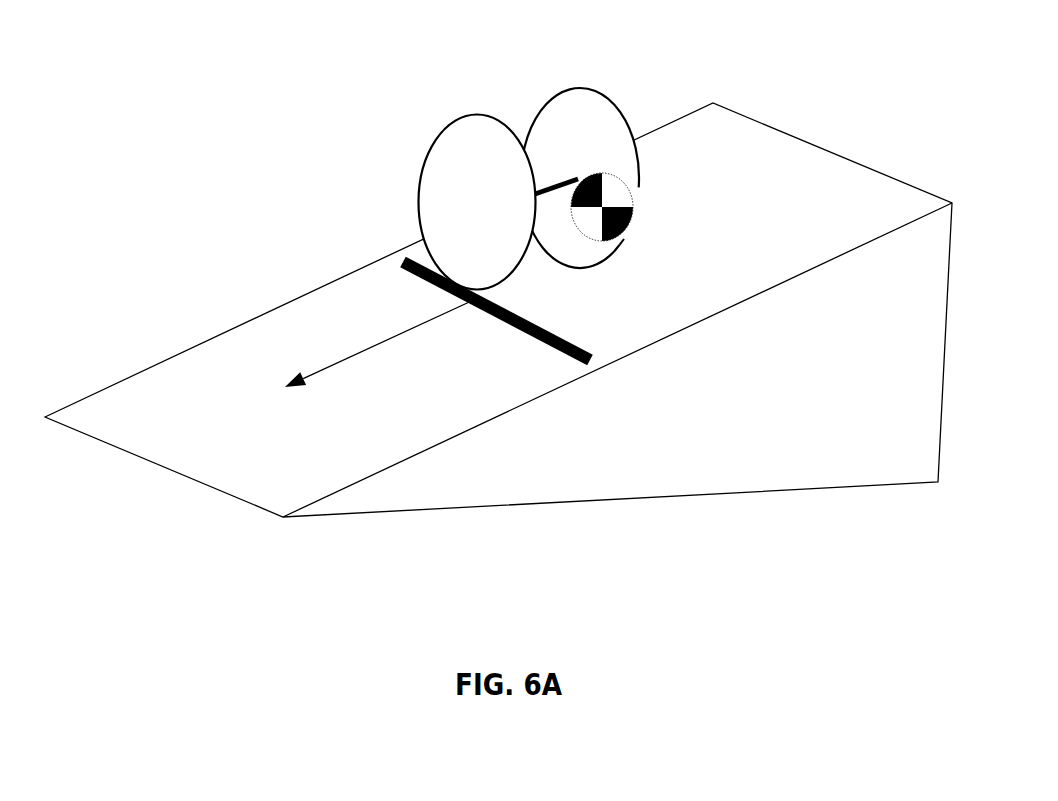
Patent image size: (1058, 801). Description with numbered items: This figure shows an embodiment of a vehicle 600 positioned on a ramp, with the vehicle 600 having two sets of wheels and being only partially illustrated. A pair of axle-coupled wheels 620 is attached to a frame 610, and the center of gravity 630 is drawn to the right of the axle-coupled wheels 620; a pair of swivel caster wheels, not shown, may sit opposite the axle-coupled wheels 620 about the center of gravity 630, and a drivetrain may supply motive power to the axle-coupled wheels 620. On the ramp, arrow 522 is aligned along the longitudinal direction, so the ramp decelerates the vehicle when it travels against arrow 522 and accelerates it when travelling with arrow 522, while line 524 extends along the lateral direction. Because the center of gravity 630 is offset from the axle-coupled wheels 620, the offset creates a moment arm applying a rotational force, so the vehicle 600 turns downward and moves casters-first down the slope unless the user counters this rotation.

The vehicle 600 is at (516, 145).
The frame 610 is at (545, 168).
The axle-coupled wheels 620 is at (425, 137).
The center of gravity 630 is at (634, 169).
The arrow 522 is at (348, 343).
The line 524 is at (522, 346).